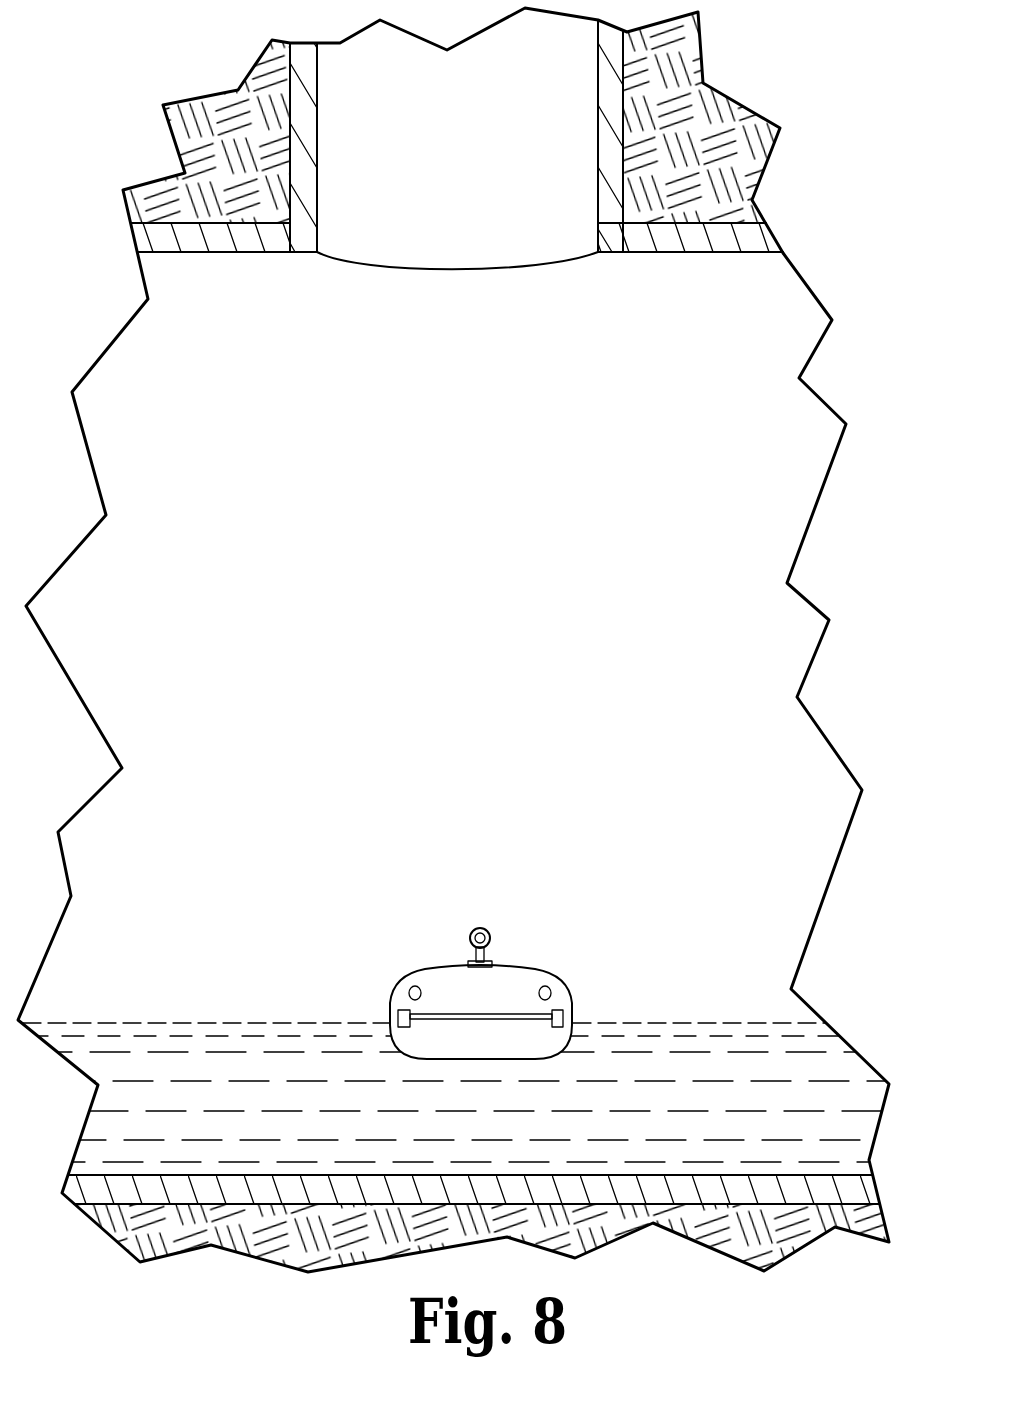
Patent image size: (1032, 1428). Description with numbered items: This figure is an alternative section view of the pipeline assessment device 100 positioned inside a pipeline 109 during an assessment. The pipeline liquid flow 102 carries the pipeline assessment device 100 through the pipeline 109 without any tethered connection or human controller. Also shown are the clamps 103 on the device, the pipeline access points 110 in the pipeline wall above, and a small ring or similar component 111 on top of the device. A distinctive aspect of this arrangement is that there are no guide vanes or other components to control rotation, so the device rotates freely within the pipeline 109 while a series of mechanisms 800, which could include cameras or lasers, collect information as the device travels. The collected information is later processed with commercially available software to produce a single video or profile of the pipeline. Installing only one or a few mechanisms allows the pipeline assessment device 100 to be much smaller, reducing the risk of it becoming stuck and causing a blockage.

The pipeline assessment device 100 is at (479, 949).
The pipeline liquid flow 102 is at (156, 1022).
The clamps 103 is at (563, 1015).
The pipeline 109 is at (681, 256).
The pipeline access points 110 is at (596, 201).
The small ring or similar component 111 is at (489, 920).
The series of mechanisms 800 is at (410, 987).